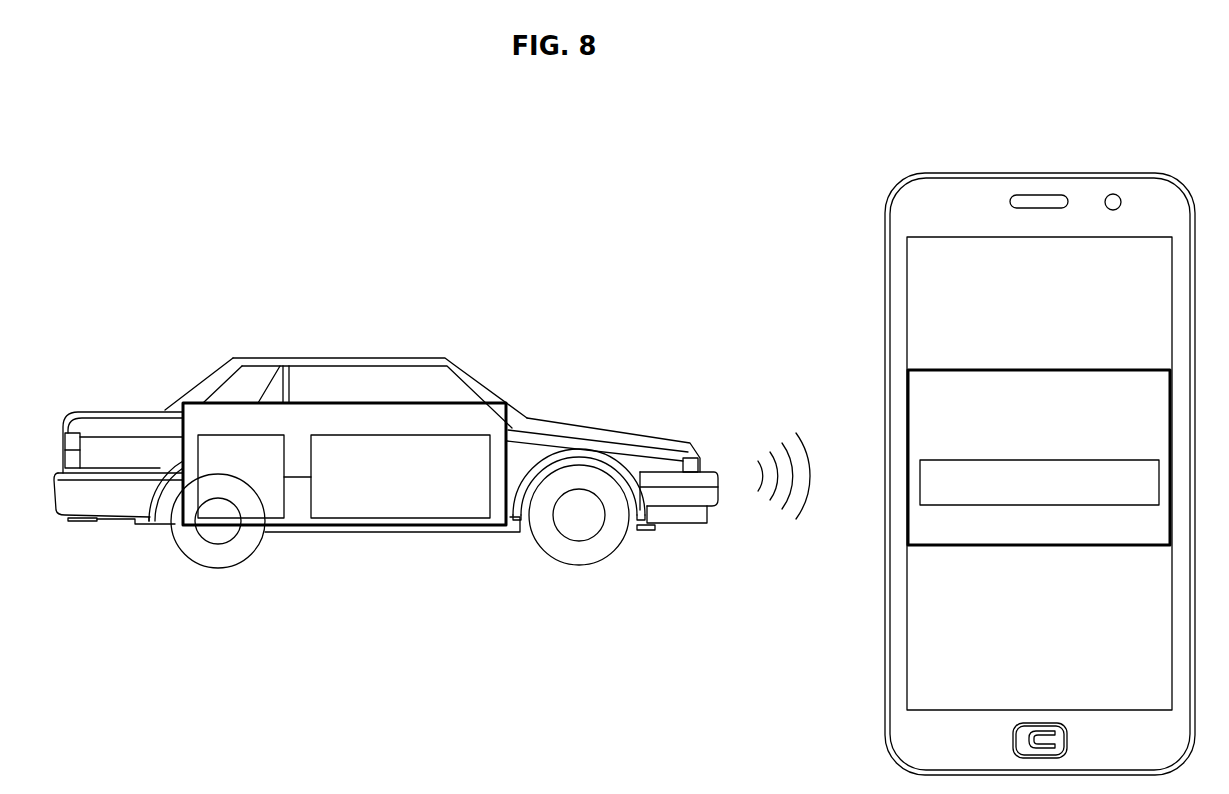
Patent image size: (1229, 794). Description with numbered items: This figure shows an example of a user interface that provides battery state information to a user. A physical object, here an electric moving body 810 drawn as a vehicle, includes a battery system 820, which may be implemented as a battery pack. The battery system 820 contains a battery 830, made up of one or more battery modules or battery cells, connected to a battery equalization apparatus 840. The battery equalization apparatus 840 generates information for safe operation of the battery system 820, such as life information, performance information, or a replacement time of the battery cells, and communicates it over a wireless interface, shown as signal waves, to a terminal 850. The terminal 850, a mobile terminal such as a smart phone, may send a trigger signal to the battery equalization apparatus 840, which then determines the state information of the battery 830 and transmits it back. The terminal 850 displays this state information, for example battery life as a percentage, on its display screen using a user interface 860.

The electric moving body 810 is at (345, 357).
The battery system 820 is at (345, 403).
The battery 830 is at (242, 435).
The battery equalization apparatus 840 is at (404, 435).
The terminal 850 is at (1038, 173).
The user interface 860 is at (1040, 370).